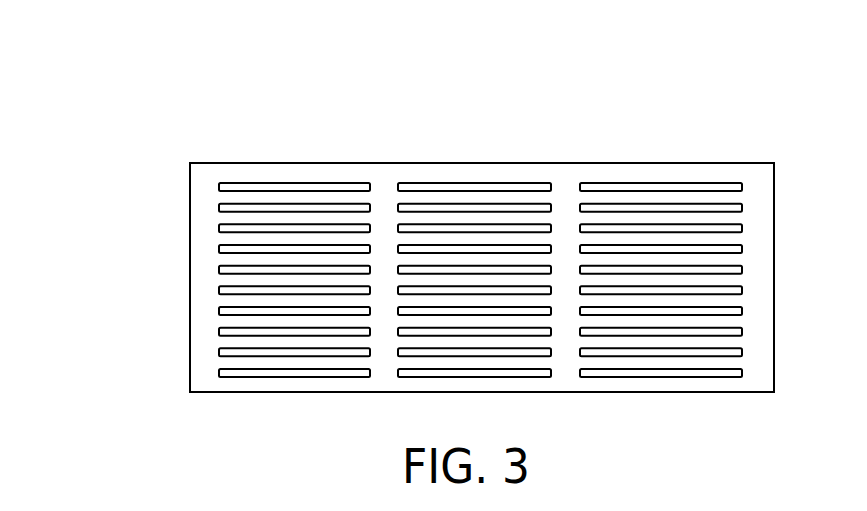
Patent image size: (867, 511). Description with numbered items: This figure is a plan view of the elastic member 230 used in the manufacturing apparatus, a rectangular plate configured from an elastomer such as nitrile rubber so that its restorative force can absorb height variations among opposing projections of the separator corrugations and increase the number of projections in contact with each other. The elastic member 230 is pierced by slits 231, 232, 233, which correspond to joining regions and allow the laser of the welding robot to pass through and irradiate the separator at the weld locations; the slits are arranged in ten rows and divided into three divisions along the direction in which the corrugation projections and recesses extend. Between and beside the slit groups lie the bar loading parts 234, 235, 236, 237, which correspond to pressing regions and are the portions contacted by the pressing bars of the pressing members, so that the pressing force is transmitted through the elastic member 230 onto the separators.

The elastic member 230 is at (155, 133).
The slit 231 is at (305, 178).
The slit 232 is at (467, 178).
The slit 233 is at (652, 180).
The bar loading part 234 is at (210, 176).
The bar loading part 235 is at (385, 176).
The bar loading part 236 is at (565, 177).
The bar loading part 237 is at (758, 177).